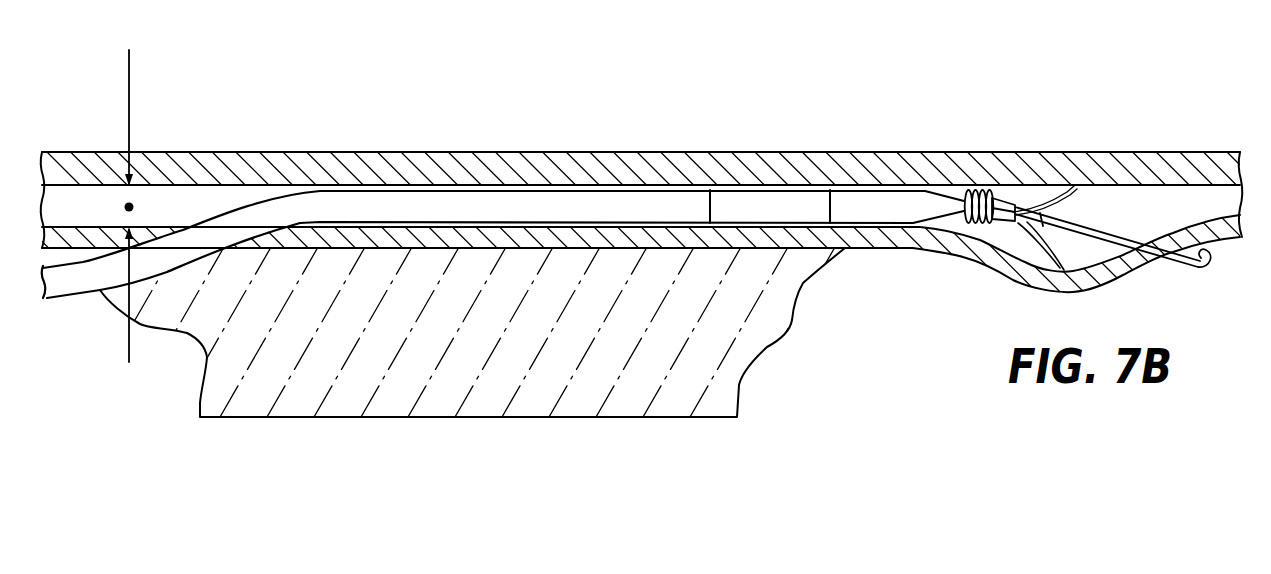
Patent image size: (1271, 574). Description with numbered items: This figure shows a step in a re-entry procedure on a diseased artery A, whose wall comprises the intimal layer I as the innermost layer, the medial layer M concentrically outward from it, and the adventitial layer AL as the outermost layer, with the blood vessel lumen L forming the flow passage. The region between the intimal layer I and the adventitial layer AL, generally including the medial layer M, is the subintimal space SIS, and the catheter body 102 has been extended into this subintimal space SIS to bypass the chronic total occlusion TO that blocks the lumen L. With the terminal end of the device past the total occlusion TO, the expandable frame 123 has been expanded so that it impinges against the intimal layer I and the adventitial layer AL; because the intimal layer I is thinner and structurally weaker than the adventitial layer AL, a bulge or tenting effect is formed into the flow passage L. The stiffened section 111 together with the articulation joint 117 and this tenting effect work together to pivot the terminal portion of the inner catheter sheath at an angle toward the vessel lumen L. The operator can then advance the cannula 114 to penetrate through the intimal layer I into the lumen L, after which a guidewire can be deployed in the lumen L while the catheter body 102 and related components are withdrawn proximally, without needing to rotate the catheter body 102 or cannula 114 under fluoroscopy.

The catheter body 102 is at (572, 207).
The stiffened section 111 is at (757, 203).
The articulation joint 117 is at (960, 200).
The cannula 114 is at (1107, 233).
The expandable frame 123 is at (1021, 238).
The intimal layer I is at (77, 237).
The subintimal space SIS is at (131, 207).
The medial layer M is at (197, 203).
The adventitial layer AL is at (382, 172).
The total occlusion TO is at (733, 347).
The blood vessel lumen L is at (913, 392).
The artery A is at (778, 100).